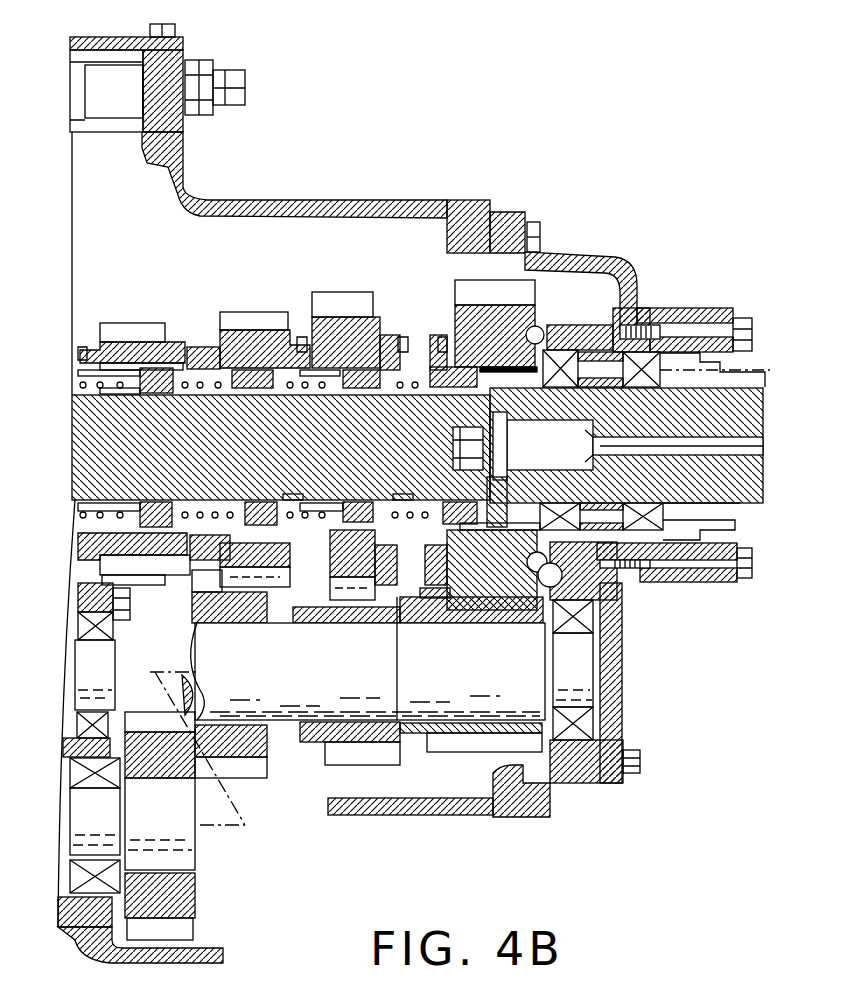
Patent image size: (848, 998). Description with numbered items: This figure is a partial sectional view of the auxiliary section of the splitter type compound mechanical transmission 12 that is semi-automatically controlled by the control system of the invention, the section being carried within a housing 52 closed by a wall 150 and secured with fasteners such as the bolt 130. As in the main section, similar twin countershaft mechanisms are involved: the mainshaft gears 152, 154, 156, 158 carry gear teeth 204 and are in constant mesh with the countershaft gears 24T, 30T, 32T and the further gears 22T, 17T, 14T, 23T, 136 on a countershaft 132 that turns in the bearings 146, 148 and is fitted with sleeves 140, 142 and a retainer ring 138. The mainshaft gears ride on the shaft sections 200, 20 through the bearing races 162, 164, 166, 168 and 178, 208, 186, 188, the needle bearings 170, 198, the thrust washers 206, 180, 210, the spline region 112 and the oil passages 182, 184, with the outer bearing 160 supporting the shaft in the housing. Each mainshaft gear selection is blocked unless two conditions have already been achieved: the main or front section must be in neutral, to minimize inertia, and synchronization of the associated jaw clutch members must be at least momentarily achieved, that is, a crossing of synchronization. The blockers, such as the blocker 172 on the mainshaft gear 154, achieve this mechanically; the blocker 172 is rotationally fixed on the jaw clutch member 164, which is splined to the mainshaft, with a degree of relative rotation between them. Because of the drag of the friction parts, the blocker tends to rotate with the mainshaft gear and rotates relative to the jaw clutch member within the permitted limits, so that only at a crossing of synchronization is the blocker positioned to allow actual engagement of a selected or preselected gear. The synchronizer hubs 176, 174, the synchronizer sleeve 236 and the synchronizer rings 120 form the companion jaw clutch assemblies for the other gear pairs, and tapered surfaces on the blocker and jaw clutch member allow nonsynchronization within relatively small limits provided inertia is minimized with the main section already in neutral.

The transmission 12 is at (284, 70).
The housing 52 is at (268, 200).
The bolt 130 is at (645, 332).
The bearing 160 is at (548, 345).
The synchronizer ring 120 is at (86, 350).
The gear 152 is at (117, 343).
The mainshaft gear 154 is at (240, 330).
The gear 156 is at (325, 320).
The gear 158 is at (455, 320).
The gear teeth 204 is at (147, 342).
The blocker 172 is at (193, 352).
The synchronizer hub 176 is at (440, 368).
The thrust washer 206 is at (110, 372).
The shaft spline 112 is at (110, 394).
The bearing race 162 is at (153, 395).
The needle bearing 170 is at (205, 392).
The jaw clutch member 164 is at (260, 390).
The bearing race 166 is at (365, 390).
The bearing race 168 is at (453, 390).
The input shaft 200 is at (281, 447).
The output shaft 20 is at (608, 445).
The oil passage 182 is at (292, 500).
The oil passage 184 is at (402, 503).
The thrust washer 180 is at (118, 506).
The bearing race 178 is at (186, 512).
The needle bearing 198 is at (250, 510).
The bearing race 208 is at (242, 510).
The thrust washer 210 is at (331, 486).
The bearing race 186 is at (372, 503).
The bearing race 188 is at (450, 503).
The synchronizer sleeve 236 is at (222, 565).
The gear 24T is at (134, 557).
The gear 30T is at (285, 565).
The synchronizer hub 174 is at (380, 540).
The gear 32T is at (497, 566).
The sleeve 140 is at (382, 627).
The sleeve 142 is at (440, 607).
The countershaft 132 is at (363, 658).
The housing wall 150 is at (592, 626).
The bearing 146 is at (93, 633).
The bearing 148 is at (98, 785).
The gear 136 is at (158, 758).
The gear 23T is at (175, 893).
The gear 22T is at (231, 743).
The retainer ring 138 is at (272, 760).
The gear 17T is at (340, 735).
The gear 14T is at (462, 735).